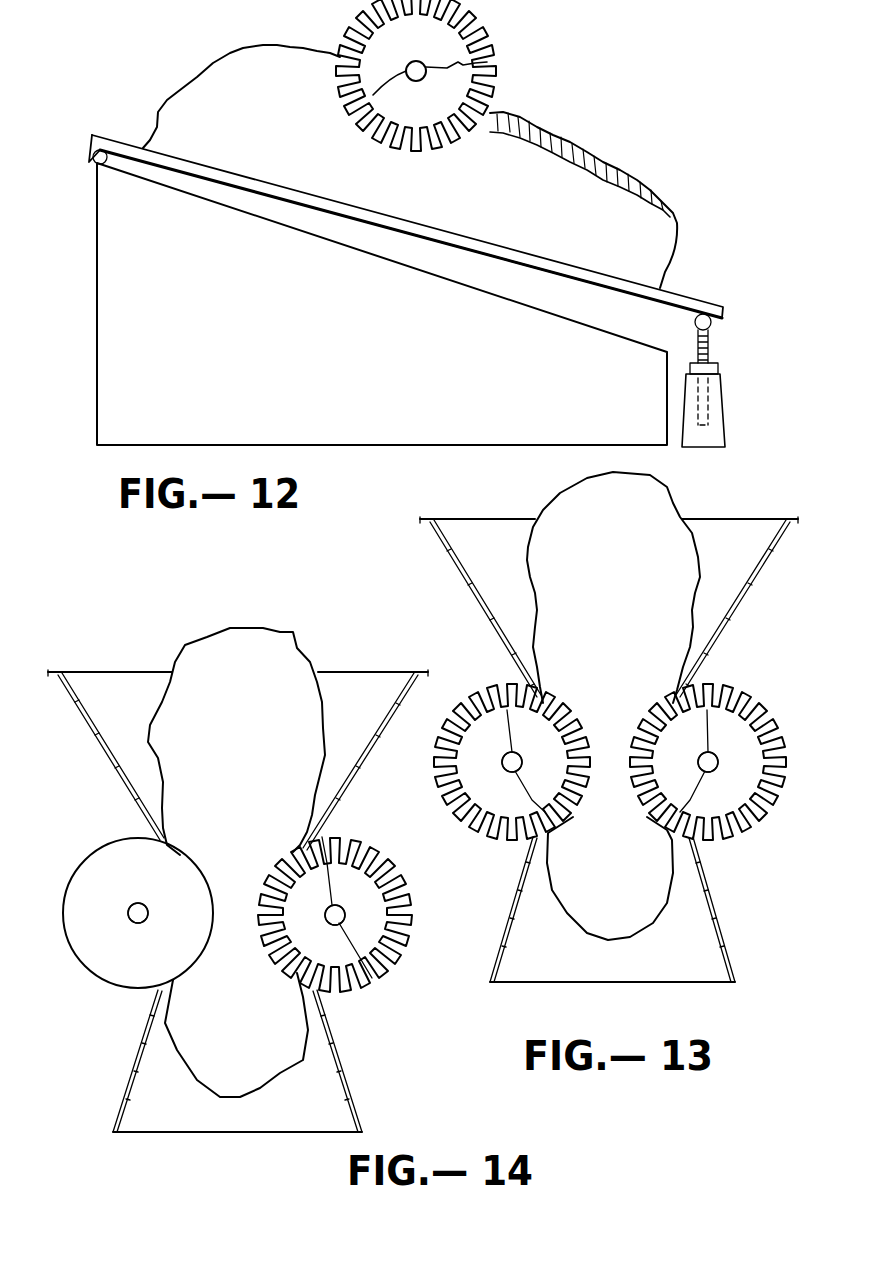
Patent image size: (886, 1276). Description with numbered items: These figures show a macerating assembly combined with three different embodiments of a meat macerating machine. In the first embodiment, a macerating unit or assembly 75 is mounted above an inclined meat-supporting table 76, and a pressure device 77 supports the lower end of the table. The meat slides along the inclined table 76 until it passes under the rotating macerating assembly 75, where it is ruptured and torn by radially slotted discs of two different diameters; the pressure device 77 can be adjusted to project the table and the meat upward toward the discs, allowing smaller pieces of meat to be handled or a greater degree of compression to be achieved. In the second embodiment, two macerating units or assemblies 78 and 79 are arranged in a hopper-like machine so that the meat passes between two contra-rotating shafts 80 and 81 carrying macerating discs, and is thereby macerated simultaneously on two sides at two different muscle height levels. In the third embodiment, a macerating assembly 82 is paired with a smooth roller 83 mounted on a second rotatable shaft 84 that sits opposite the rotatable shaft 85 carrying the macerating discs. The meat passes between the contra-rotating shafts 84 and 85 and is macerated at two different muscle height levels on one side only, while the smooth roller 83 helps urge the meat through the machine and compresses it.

In FIG. 12, the macerating unit or assembly 75 is at (452, 52).
In FIG. 12, the inclined meat-supporting table 76 is at (680, 298).
In FIG. 12, the pressure device 77 is at (718, 413).
In FIG. 13, the macerating unit or assembly 78 is at (493, 712).
In FIG. 13, the macerating unit or assembly 79 is at (757, 707).
In FIG. 13, the contra-rotating shaft 80 is at (510, 772).
In FIG. 13, the contra-rotating shaft 81 is at (710, 772).
In FIG. 14, the macerating assembly 82 is at (363, 853).
In FIG. 14, the smooth roller 83 is at (112, 857).
In FIG. 14, the second rotatable shaft 84 is at (137, 922).
In FIG. 14, the rotatable shaft 85 is at (335, 925).